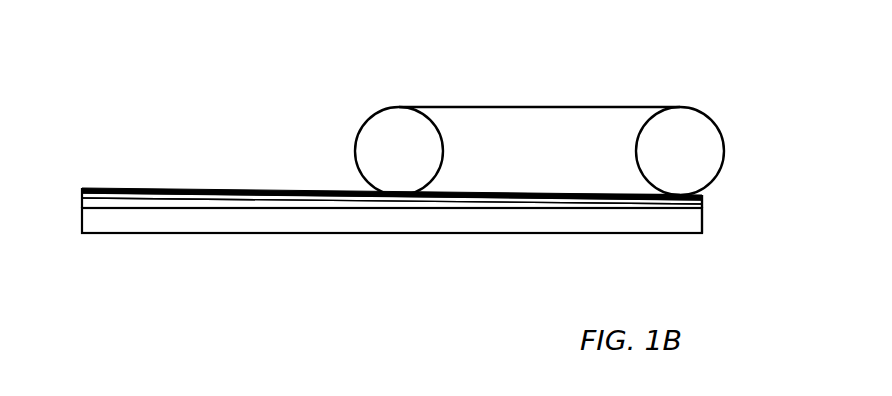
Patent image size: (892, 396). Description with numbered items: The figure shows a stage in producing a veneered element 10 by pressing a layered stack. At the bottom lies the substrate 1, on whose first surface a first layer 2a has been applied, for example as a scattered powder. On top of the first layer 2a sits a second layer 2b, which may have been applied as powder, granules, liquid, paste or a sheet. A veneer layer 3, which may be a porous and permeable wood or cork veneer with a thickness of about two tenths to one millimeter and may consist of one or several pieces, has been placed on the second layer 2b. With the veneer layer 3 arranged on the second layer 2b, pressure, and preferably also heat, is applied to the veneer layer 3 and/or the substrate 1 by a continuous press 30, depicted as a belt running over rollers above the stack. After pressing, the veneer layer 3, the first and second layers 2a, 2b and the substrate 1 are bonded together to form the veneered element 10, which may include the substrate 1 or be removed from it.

The substrate 1 is at (182, 225).
The first layer 2a is at (125, 205).
The second layer 2b is at (207, 199).
The veneer layer 3 is at (317, 193).
The veneered element 10 is at (716, 211).
The continuous press 30 is at (522, 99).